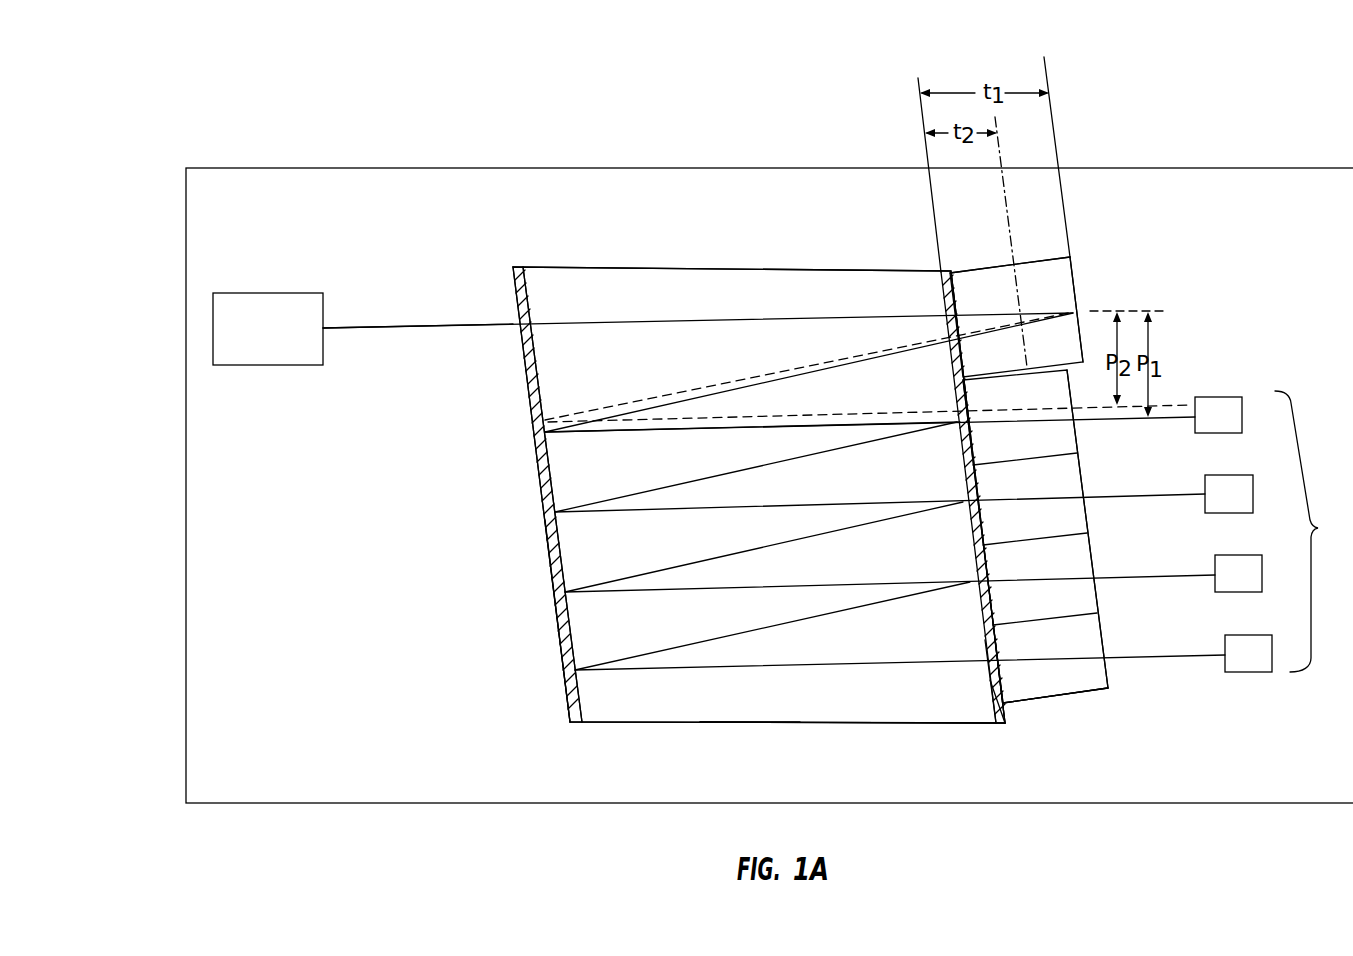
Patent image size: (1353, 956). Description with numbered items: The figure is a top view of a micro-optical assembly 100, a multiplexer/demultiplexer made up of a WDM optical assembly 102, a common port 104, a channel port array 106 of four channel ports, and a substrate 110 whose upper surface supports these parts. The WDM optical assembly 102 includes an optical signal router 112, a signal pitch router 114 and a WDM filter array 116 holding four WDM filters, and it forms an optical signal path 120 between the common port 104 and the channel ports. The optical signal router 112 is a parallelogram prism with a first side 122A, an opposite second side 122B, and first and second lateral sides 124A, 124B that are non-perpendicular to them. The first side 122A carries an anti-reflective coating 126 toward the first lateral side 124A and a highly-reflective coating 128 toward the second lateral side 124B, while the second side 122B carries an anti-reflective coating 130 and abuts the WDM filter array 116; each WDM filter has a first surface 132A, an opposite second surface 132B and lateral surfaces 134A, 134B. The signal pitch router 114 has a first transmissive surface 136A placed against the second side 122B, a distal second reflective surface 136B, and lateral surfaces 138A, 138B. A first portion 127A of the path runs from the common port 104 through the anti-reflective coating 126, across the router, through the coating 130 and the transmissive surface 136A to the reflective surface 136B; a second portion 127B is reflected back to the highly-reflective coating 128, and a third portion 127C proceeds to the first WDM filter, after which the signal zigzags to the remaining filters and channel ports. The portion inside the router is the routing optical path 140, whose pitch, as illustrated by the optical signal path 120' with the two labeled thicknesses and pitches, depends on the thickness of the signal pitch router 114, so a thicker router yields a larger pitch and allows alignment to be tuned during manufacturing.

The micro-optical assembly 100 is at (1221, 76).
The WDM optical assembly 102 is at (662, 260).
The common port 104 is at (283, 293).
The channel port array 106 is at (1314, 531).
The substrate 110 is at (356, 168).
The optical signal router 112 is at (772, 727).
The signal pitch router 114 is at (1071, 262).
The WDM filter array 116 is at (1108, 548).
The optical signal path 120 is at (698, 275).
The optical signal path 120' is at (809, 366).
The first side 122A is at (523, 380).
The second side 122B is at (1009, 688).
The first lateral side 124A is at (722, 268).
The second lateral side 124B is at (637, 725).
The anti-reflective coating 126 is at (513, 288).
The first portion of the optical signal path 127A is at (392, 325).
The second portion of the optical signal path 127B is at (672, 402).
The third portion of the optical signal path 127C is at (675, 432).
The highly-reflective coating 128 is at (556, 622).
The anti-reflective coating 130 is at (997, 695).
The first surface 132A is at (990, 677).
The second surface 132B is at (1112, 678).
The first lateral surface 134A is at (1016, 622).
The second lateral surface 134B is at (1077, 694).
The first transmissive surface 136A is at (941, 293).
The second reflective surface 136B is at (1078, 295).
The first lateral surface 138A is at (1052, 258).
The second lateral surface 138B is at (962, 392).
The routing optical path 140 is at (738, 680).